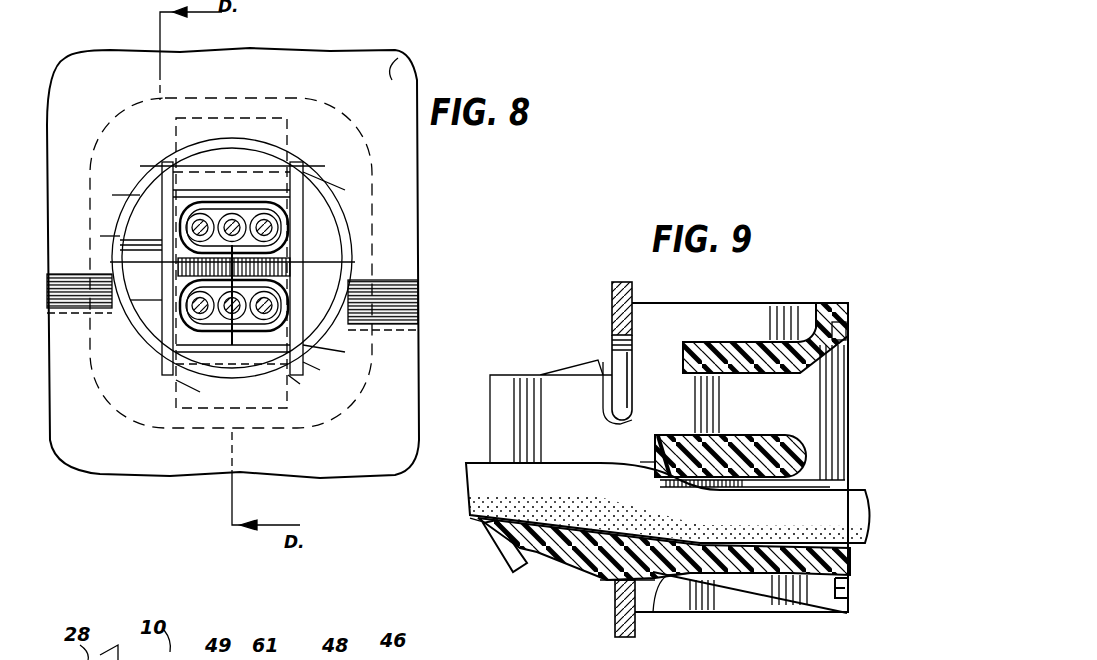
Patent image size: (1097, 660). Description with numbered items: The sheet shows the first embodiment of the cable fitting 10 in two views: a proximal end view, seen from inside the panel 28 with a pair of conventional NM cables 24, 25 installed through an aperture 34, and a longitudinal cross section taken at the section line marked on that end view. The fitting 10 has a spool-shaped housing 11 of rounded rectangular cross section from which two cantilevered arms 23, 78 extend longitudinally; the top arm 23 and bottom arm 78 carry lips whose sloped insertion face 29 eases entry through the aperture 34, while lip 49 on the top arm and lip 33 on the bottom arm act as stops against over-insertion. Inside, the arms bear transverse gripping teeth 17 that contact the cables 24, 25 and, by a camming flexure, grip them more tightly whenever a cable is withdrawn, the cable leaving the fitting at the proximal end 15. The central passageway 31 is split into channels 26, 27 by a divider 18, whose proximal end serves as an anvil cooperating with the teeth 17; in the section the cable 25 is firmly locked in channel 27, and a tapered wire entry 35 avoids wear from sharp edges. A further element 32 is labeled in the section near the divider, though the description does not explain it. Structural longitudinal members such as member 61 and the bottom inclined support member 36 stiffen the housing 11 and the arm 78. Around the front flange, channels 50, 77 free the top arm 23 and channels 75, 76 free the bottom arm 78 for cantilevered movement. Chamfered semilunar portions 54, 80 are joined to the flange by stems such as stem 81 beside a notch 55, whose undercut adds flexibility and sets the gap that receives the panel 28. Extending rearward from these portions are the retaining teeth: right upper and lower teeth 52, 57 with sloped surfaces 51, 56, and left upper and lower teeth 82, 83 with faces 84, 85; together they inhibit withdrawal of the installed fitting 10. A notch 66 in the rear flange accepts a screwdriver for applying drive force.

In FIG. 8, the fitting 10 is at (103, 64).
In FIG. 9, the fitting 10 is at (840, 270).
In FIG. 8, the housing 11 is at (104, 404).
In FIG. 9, the housing 11 is at (712, 606).
In FIG. 9, the wire exit or proximal end 15 is at (500, 572).
In FIG. 9, the gripping teeth 17 is at (608, 527).
In FIG. 8, the divider 18 is at (162, 300).
In FIG. 9, the divider 18 is at (762, 440).
In FIG. 8, the cantilevered arm 23 is at (268, 180).
In FIG. 8, the cable 24 is at (232, 295).
In FIG. 8, the cable 25 is at (182, 362).
In FIG. 9, the cable 25 is at (760, 516).
In FIG. 9, the channel 26 is at (828, 388).
In FIG. 9, the channel 27 is at (805, 482).
In FIG. 8, the panel 28 is at (406, 57).
In FIG. 9, the panel 28 is at (612, 300).
In FIG. 8, the insertion face 29 is at (185, 192).
In FIG. 9, the central passageway 31 is at (818, 460).
In FIG. 9, the wedge 32 is at (655, 452).
In FIG. 8, the lip 33 is at (200, 428).
In FIG. 9, the lip 33 is at (648, 608).
In FIG. 8, the aperture 34 is at (104, 236).
In FIG. 9, the aperture 34 is at (613, 362).
In FIG. 9, the tapered wire entry 35 is at (849, 570).
In FIG. 9, the bottom inclined longitudinal support member 36 is at (748, 608).
In FIG. 8, the lip 49 is at (199, 104).
In FIG. 8, the channel 50 is at (303, 178).
In FIG. 8, the sloped surface 51 is at (356, 205).
In FIG. 8, the right upper retaining tooth 52 is at (312, 172).
In FIG. 8, the semilunar portion 54 is at (352, 252).
In FIG. 9, the notch 55 is at (633, 414).
In FIG. 8, the sloped surface 56 is at (356, 346).
In FIG. 8, the right lower retaining tooth 57 is at (324, 360).
In FIG. 9, the longitudinal member 61 is at (745, 328).
In FIG. 9, the notch 66 is at (849, 590).
In FIG. 8, the channel 75 is at (306, 370).
In FIG. 8, the channel 76 is at (182, 392).
In FIG. 8, the channel 77 is at (176, 172).
In FIG. 8, the cantilevered arm 78 is at (292, 376).
In FIG. 9, the cantilevered arm 78 is at (490, 534).
In FIG. 8, the semilunar portion 80 is at (130, 262).
In FIG. 9, the stem 81 is at (606, 426).
In FIG. 8, the left upper retaining tooth 82 is at (150, 166).
In FIG. 8, the left lower retaining tooth 83 is at (168, 352).
In FIG. 8, the face 84 is at (120, 196).
In FIG. 8, the face 85 is at (118, 336).